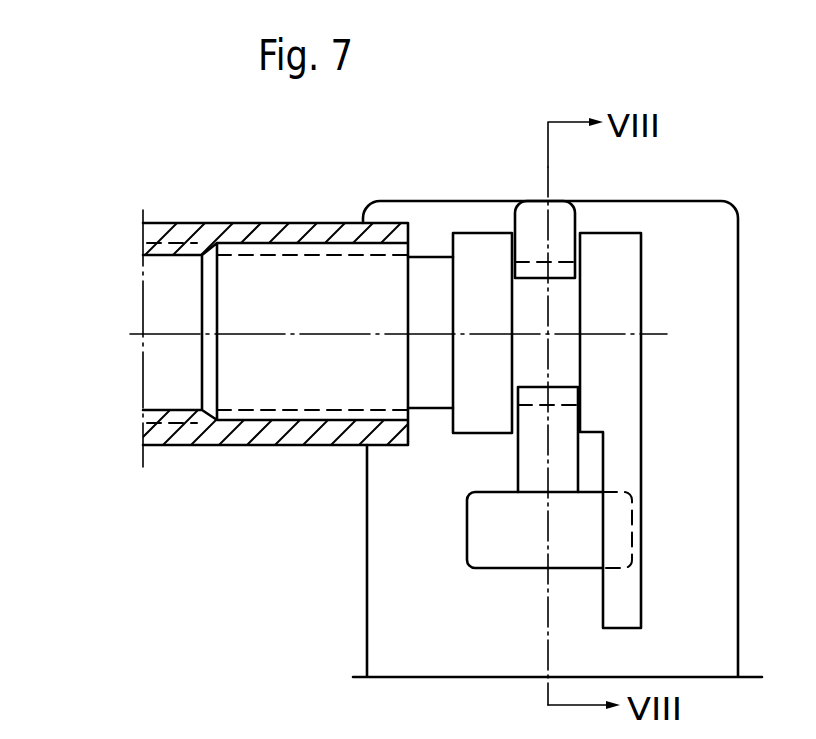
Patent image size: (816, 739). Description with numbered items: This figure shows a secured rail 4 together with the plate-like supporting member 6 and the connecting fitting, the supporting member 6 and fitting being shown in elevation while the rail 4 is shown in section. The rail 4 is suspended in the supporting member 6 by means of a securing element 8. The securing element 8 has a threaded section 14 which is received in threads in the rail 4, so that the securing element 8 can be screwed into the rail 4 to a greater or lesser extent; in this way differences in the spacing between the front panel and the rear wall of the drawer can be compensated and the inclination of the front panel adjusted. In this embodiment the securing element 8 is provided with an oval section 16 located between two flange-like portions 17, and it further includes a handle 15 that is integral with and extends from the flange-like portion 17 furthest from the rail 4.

The rail 4 is at (166, 211).
The threaded section 14 is at (237, 282).
The securing element 8 is at (469, 215).
The flange-like portions 17 is at (484, 252).
The oval section 16 is at (552, 320).
The supporting member 6 is at (752, 523).
The handle 15 is at (622, 612).